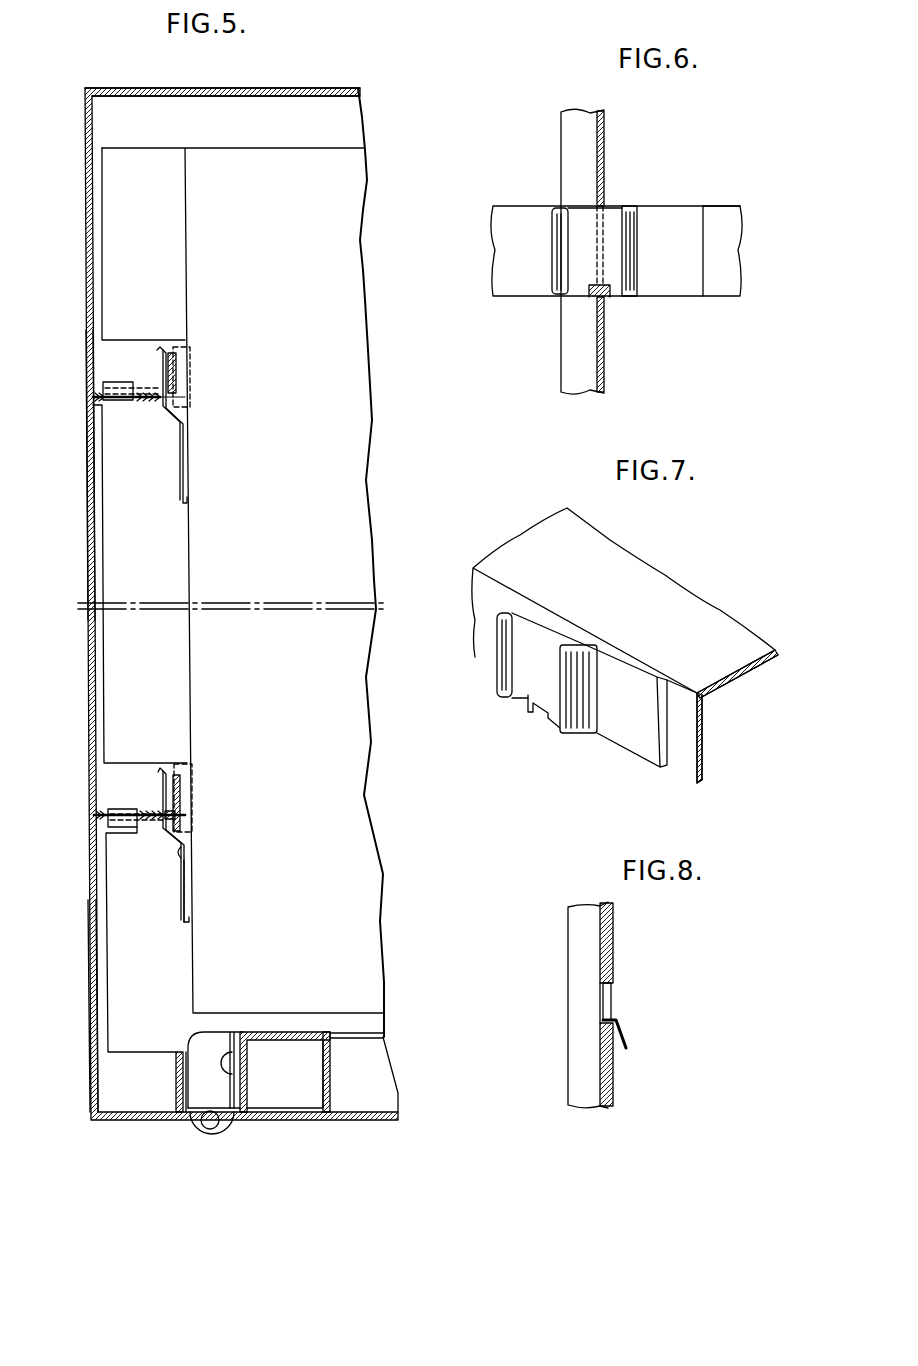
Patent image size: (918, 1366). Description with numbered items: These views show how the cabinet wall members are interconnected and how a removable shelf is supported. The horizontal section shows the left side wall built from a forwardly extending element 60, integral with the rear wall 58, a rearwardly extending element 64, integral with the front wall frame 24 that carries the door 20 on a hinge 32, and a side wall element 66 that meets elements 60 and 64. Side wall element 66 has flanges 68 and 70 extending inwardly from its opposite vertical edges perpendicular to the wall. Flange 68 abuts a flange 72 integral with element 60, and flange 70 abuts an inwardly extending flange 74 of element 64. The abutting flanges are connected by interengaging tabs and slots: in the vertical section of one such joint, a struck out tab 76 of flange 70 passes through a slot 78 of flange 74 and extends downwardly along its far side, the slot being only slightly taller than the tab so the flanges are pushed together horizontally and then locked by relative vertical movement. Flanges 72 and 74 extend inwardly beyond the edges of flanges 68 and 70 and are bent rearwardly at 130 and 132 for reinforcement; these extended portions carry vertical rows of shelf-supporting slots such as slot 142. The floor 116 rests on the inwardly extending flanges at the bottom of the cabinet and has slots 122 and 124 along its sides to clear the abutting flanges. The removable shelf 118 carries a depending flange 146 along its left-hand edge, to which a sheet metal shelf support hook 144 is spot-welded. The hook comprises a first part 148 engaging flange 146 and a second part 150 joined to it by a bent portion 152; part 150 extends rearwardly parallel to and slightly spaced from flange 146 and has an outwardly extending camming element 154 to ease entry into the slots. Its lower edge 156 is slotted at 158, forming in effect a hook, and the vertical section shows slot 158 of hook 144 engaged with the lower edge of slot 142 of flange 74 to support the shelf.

In FIG. 5, the door 20 is at (364, 1121).
In FIG. 5, the frame 24 is at (146, 1121).
In FIG. 5, the hinge 32 is at (213, 1133).
In FIG. 5, the rear wall 58 is at (290, 64).
In FIG. 5, the forwardly extending element 60 is at (87, 268).
In FIG. 5, the rearwardly extending element 64 is at (89, 953).
In FIG. 5, the side wall element 66 is at (87, 497).
In FIG. 5, the flange 68 is at (141, 401).
In FIG. 5, the flange 70 is at (150, 812).
In FIG. 8, the flange 70 is at (600, 940).
In FIG. 5, the flange 72 is at (143, 393).
In FIG. 5, the flange 74 is at (146, 820).
In FIG. 6, the flange 74 is at (605, 369).
In FIG. 8, the flange 74 is at (614, 1086).
In FIG. 5, the struck out tab 76 is at (105, 827).
In FIG. 8, the struck out tab 76 is at (623, 1041).
In FIG. 8, the slot 78 is at (614, 985).
In FIG. 5, the floor 116 is at (118, 660).
In FIG. 5, the shelf 118 is at (345, 193).
In FIG. 6, the shelf 118 is at (531, 188).
In FIG. 7, the shelf 118 is at (681, 591).
In FIG. 5, the slot 122 is at (93, 770).
In FIG. 5, the slot 124 is at (96, 345).
In FIG. 5, the bent portion 130 is at (178, 396).
In FIG. 5, the bent portion 132 is at (176, 819).
In FIG. 5, the shelf-supporting slot 142 is at (160, 827).
In FIG. 6, the shelf-supporting slot 142 is at (604, 198).
In FIG. 5, the shelf support hook 144 is at (197, 831).
In FIG. 6, the shelf support hook 144 is at (600, 258).
In FIG. 7, the shelf support hook 144 is at (547, 684).
In FIG. 6, the depending flange 146 is at (727, 274).
In FIG. 7, the depending flange 146 is at (685, 739).
In FIG. 5, the first part 148 is at (187, 883).
In FIG. 6, the first part 148 is at (694, 216).
In FIG. 7, the first part 148 is at (637, 734).
In FIG. 5, the second part 150 is at (159, 790).
In FIG. 6, the second part 150 is at (589, 266).
In FIG. 7, the second part 150 is at (527, 645).
In FIG. 5, the bent portion 152 is at (181, 855).
In FIG. 6, the bent portion 152 is at (631, 233).
In FIG. 7, the bent portion 152 is at (588, 661).
In FIG. 5, the camming element 154 is at (172, 765).
In FIG. 6, the camming element 154 is at (557, 246).
In FIG. 7, the camming element 154 is at (496, 661).
In FIG. 7, the lower edge 156 is at (528, 686).
In FIG. 6, the slot 158 is at (609, 297).
In FIG. 7, the slot 158 is at (548, 713).